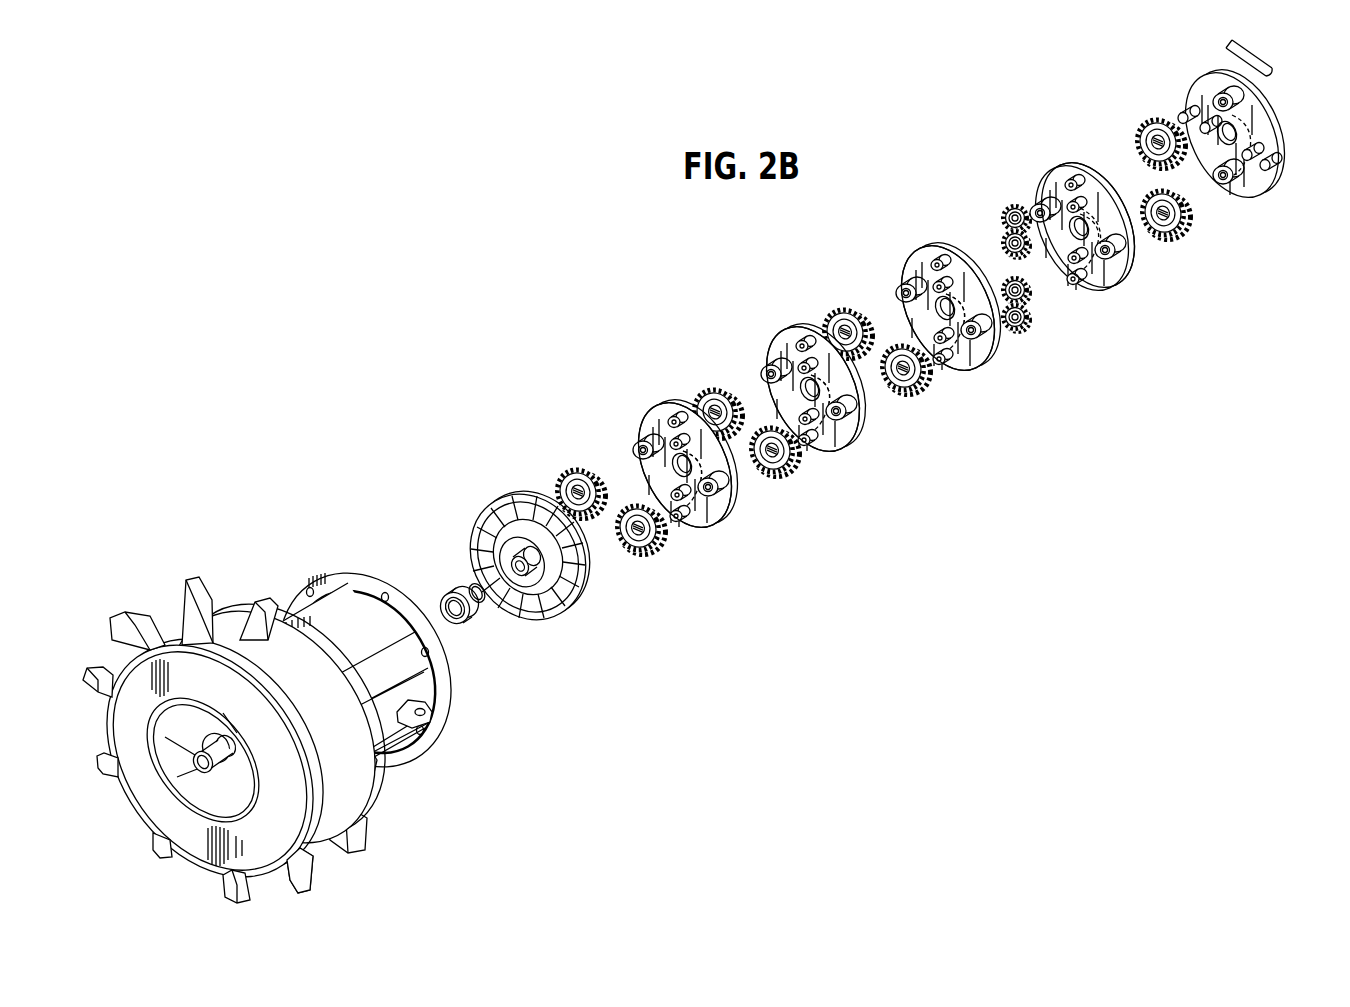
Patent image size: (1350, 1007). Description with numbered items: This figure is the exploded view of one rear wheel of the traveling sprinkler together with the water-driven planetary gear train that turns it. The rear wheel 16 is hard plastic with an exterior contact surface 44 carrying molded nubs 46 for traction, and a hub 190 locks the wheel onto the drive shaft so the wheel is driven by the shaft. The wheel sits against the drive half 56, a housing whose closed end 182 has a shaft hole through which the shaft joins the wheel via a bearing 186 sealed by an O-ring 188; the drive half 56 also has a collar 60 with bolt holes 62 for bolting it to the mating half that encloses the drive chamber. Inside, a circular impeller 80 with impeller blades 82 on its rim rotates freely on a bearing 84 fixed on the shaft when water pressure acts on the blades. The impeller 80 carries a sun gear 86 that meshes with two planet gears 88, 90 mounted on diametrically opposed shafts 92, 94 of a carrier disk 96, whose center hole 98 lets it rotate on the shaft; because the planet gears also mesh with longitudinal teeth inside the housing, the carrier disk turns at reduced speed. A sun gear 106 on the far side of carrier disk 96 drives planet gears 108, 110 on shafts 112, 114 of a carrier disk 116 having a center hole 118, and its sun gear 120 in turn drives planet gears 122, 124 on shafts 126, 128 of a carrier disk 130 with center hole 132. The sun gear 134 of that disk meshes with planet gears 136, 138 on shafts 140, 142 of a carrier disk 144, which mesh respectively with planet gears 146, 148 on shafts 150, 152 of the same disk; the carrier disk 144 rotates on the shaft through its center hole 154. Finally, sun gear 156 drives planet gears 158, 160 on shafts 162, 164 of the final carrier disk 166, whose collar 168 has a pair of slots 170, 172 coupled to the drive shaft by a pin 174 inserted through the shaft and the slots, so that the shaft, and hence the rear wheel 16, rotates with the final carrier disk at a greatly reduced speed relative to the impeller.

The rear wheel 16 is at (214, 746).
The hub 190 is at (198, 760).
The exterior contact surface 44 is at (276, 738).
The nubs 46 is at (340, 858).
The closed end 182 is at (410, 737).
The drive half 56 is at (357, 659).
The collar 60 is at (365, 654).
The bolt holes 62 is at (385, 593).
The O-ring 188 is at (470, 588).
The bearing 186 is at (465, 620).
The impeller 80 is at (543, 552).
The impeller blades 82 is at (478, 505).
The bearing 84 is at (522, 621).
The sun gear 86 is at (588, 560).
The planet gear 88 is at (575, 465).
The planet gear 90 is at (646, 553).
The shaft 92 is at (632, 423).
The shaft 94 is at (696, 465).
The carrier disk 96 is at (683, 448).
The center hole 98 is at (712, 523).
The sun gear 106 is at (737, 482).
The planet gear 108 is at (700, 390).
The planet gear 110 is at (790, 470).
The shaft 112 is at (754, 350).
The shaft 114 is at (813, 387).
The carrier disk 116 is at (806, 375).
The center hole 118 is at (849, 442).
The sun gear 120 is at (860, 411).
The planet gear 122 is at (830, 310).
The planet gear 124 is at (920, 395).
The shaft 126 is at (985, 364).
The shaft 128 is at (880, 269).
The carrier disk 130 is at (935, 298).
The center hole 132 is at (926, 294).
The sun gear 134 is at (938, 261).
The planet gear 136 is at (1000, 243).
The planet gear 138 is at (1030, 325).
The shaft 140 is at (1117, 273).
The shaft 142 is at (1036, 165).
The carrier disk 144 is at (1017, 185).
The planet gear 146 is at (1000, 218).
The planet gear 148 is at (1017, 305).
The shaft 150 is at (1092, 303).
The shaft 152 is at (1074, 218).
The center hole 154 is at (1100, 225).
The sun gear 156 is at (1071, 178).
The planet gear 158 is at (1135, 142).
The planet gear 160 is at (1186, 225).
The shaft 162 is at (1206, 75).
The shaft 164 is at (1245, 193).
The final carrier disk 166 is at (1234, 133).
The collar 168 is at (1254, 135).
The slot 170 is at (1262, 114).
The slot 172 is at (1295, 181).
The pin 174 is at (1270, 60).